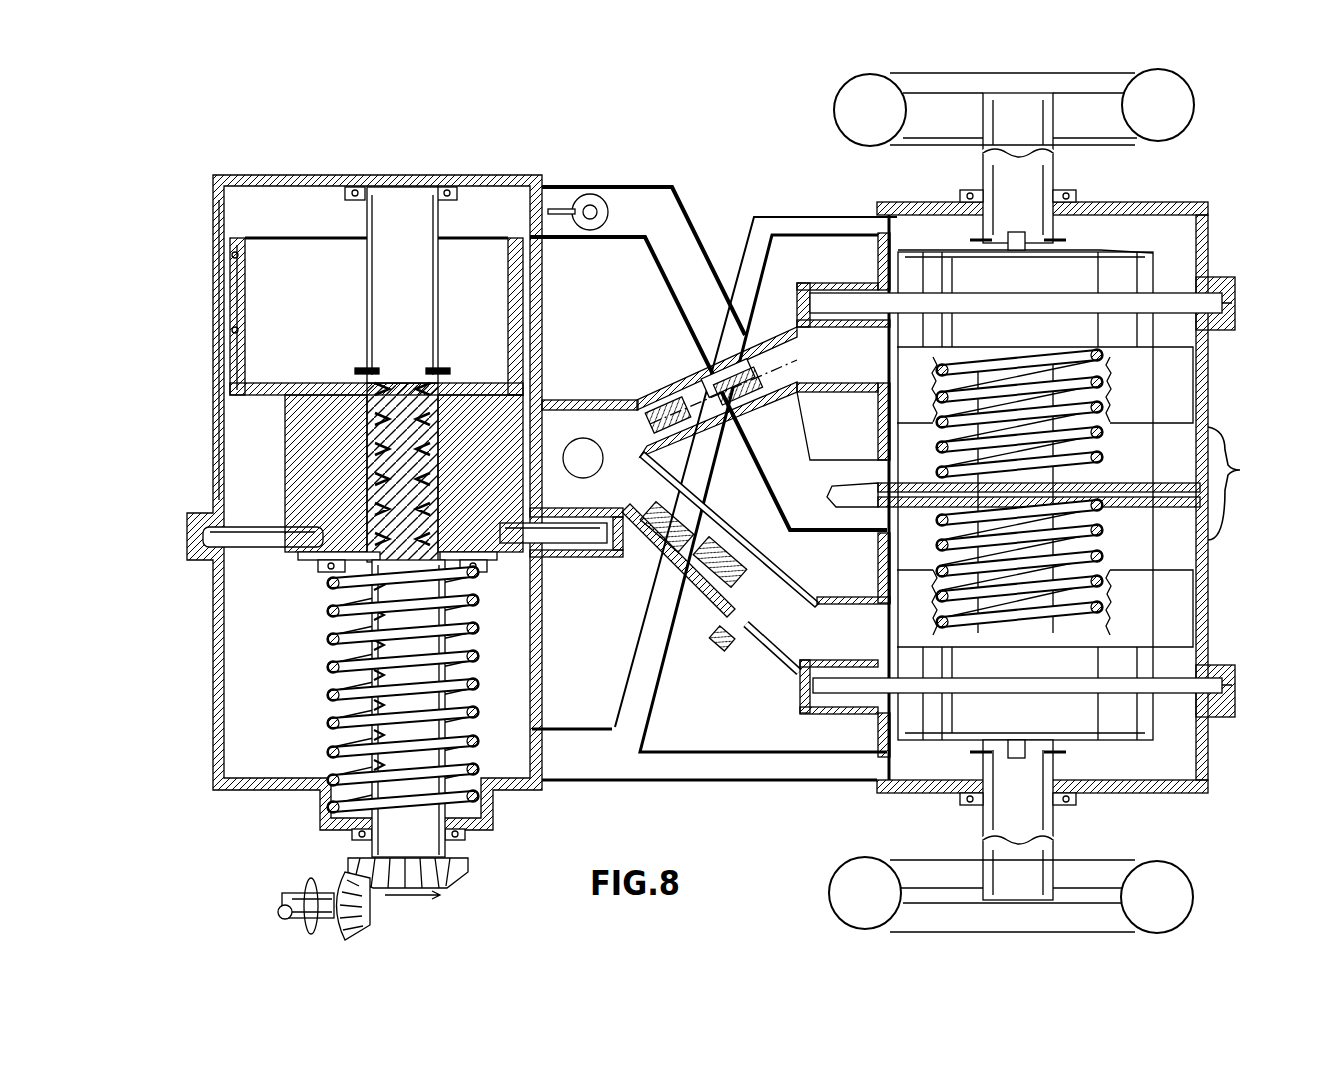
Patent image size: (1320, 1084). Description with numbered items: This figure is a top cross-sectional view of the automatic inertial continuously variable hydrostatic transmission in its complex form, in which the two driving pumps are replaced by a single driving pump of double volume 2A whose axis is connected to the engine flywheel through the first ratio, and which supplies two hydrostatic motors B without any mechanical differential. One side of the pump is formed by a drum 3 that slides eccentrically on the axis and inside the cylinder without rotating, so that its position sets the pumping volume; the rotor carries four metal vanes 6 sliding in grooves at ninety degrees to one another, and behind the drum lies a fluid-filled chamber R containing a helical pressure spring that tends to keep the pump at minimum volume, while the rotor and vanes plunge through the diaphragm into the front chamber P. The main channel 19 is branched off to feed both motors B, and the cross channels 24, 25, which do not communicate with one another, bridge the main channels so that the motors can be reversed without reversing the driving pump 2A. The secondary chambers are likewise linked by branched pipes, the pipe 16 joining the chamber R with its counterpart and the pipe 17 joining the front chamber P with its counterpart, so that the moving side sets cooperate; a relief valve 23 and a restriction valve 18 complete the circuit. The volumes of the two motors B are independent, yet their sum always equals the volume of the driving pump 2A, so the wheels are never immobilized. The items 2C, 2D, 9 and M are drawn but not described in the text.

The driving pump of double volume 2A is at (312, 175).
The spring chamber 2C is at (302, 655).
The piston 2D is at (497, 309).
The drum 3 is at (230, 280).
The metal vanes 6 is at (227, 418).
The threaded nut 9 is at (283, 477).
The pipe 16 is at (663, 213).
The pipe 17 is at (580, 753).
The restriction valve 18 is at (590, 197).
The main channel 19 is at (783, 623).
The relief valve 23 is at (580, 455).
The cross channel 24 is at (673, 427).
The cross channel 25 is at (717, 383).
The motor M is at (287, 907).
The front chamber P is at (1022, 501).
The chamber of the cylinder R is at (1039, 497).
The motor B is at (1249, 483).